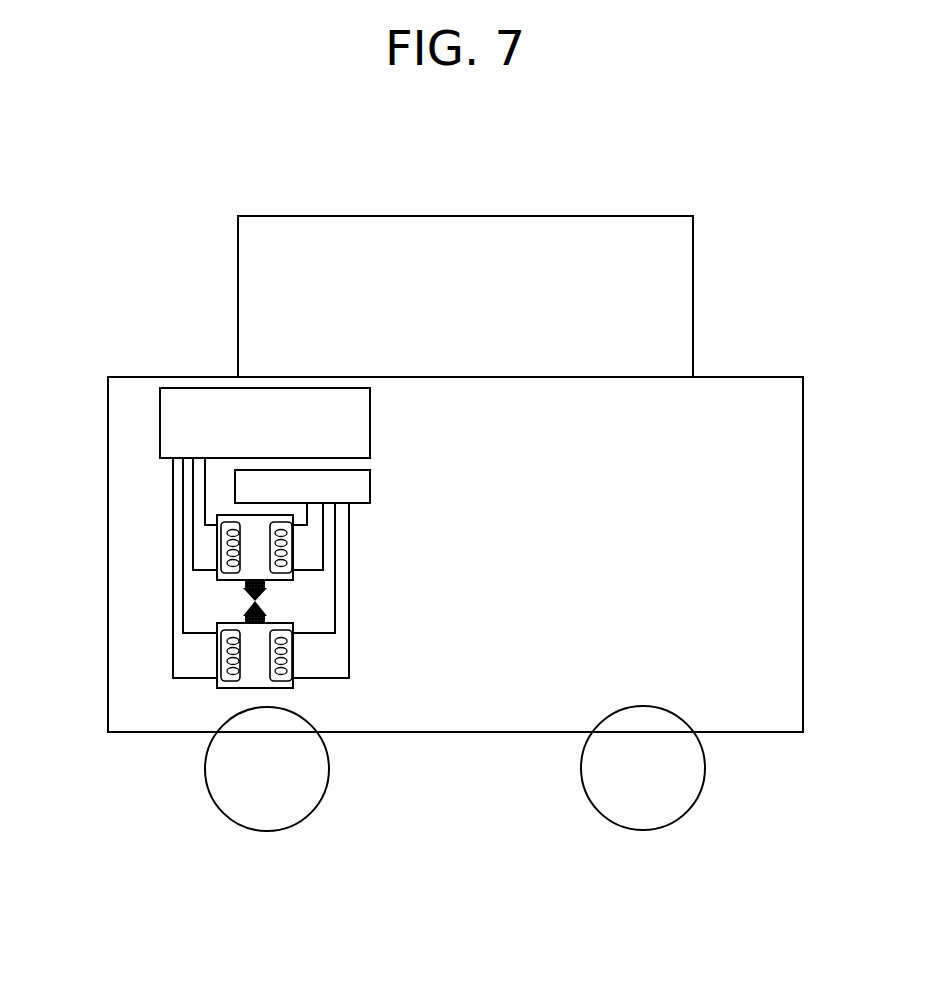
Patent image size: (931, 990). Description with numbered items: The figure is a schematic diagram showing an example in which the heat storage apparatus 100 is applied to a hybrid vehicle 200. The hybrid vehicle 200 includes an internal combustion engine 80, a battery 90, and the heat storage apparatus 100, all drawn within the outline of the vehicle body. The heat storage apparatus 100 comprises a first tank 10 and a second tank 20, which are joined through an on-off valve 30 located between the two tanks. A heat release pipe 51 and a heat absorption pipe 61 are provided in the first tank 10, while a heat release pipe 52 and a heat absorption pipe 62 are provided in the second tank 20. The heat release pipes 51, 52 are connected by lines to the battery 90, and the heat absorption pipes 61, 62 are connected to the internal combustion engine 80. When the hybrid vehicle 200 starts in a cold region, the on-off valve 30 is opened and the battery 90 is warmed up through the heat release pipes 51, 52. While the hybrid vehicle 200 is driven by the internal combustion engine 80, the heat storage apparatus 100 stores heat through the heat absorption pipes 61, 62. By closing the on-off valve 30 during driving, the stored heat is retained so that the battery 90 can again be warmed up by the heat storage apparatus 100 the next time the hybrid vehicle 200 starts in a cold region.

The hybrid vehicle 200 is at (723, 402).
The internal combustion engine 80 is at (217, 408).
The battery 90 is at (248, 492).
The heat storage apparatus 100 is at (312, 484).
The second tank 20 is at (312, 365).
The heat absorption pipe 62 is at (223, 545).
The heat release pipe 52 is at (285, 547).
The on-off valve 30 is at (247, 598).
The first tank 10 is at (253, 720).
The heat absorption pipe 61 is at (222, 653).
The heat release pipe 51 is at (278, 654).